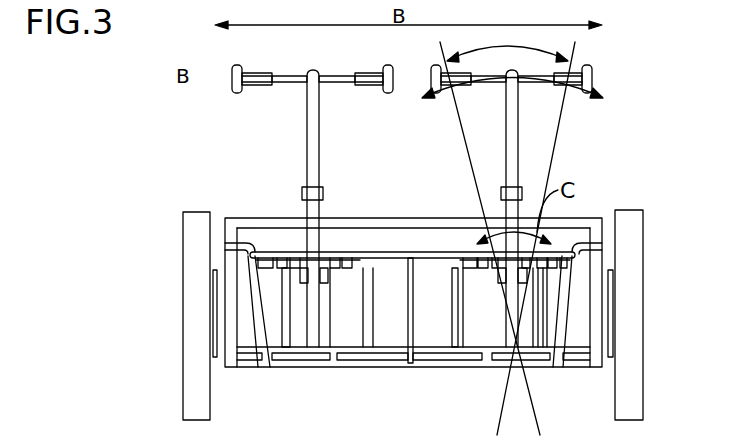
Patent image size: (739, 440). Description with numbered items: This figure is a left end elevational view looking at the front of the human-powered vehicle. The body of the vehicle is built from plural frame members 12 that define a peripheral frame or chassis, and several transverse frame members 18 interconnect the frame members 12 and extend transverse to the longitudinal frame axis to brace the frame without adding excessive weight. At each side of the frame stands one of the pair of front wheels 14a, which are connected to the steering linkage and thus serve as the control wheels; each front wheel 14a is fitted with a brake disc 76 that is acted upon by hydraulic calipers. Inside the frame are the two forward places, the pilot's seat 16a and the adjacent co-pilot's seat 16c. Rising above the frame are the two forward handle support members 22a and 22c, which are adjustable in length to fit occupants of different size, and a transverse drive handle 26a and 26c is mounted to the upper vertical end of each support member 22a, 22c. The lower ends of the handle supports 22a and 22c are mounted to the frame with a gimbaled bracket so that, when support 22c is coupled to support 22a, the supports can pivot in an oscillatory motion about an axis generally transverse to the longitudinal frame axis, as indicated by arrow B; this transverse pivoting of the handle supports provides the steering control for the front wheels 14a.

The frame member 12 is at (352, 250).
The front wheel 14a is at (193, 400).
The seat 16a is at (463, 272).
The seat 16c is at (330, 272).
The transverse frame member 18 is at (347, 222).
The handle support member 22a is at (537, 195).
The handle support member 22c is at (290, 191).
The transverse drive handle 26a is at (570, 72).
The transverse drive handle 26c is at (258, 72).
The disc 76 is at (213, 275).